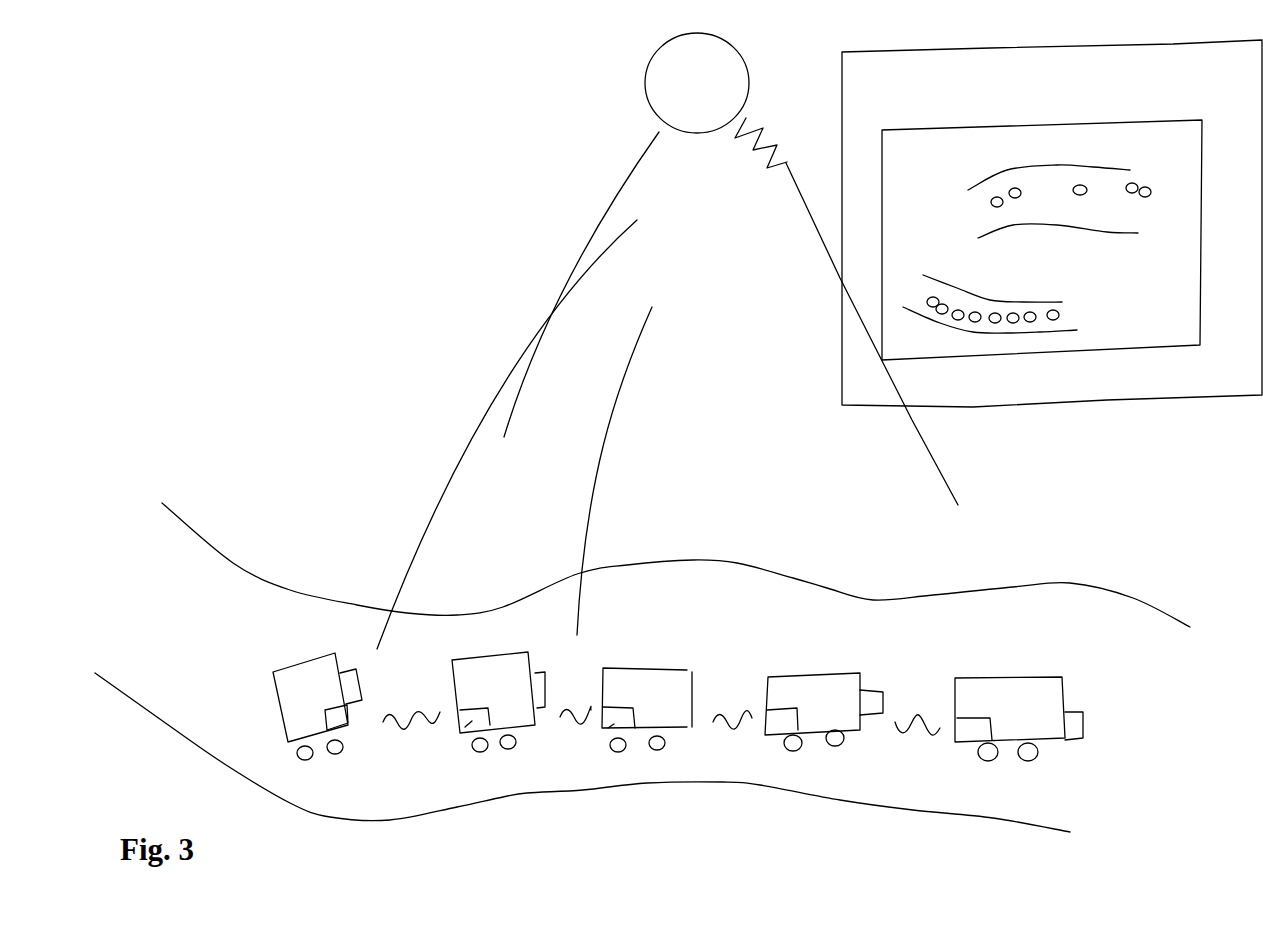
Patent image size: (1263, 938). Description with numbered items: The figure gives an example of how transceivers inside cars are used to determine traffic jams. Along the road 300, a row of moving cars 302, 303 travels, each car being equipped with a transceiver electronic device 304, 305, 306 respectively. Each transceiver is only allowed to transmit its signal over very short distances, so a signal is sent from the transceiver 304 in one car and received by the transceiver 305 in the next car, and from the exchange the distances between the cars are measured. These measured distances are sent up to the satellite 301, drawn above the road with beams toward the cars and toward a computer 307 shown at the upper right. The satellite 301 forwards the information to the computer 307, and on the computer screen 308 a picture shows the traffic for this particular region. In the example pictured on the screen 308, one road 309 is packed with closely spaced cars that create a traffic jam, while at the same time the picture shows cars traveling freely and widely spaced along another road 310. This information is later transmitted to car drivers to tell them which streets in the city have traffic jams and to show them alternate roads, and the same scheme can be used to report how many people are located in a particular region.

The road 300 is at (740, 562).
The satellite 301 is at (753, 73).
The car 302 is at (310, 657).
The car 303 is at (498, 643).
The transceiver electronic device 304 is at (353, 723).
The transceiver electronic device 305 is at (463, 737).
The transceiver electronic device 306 is at (611, 723).
The computer 307 is at (1052, 223).
The computer screen 308 is at (1042, 231).
The road 309 is at (1017, 297).
The road 310 is at (1093, 163).